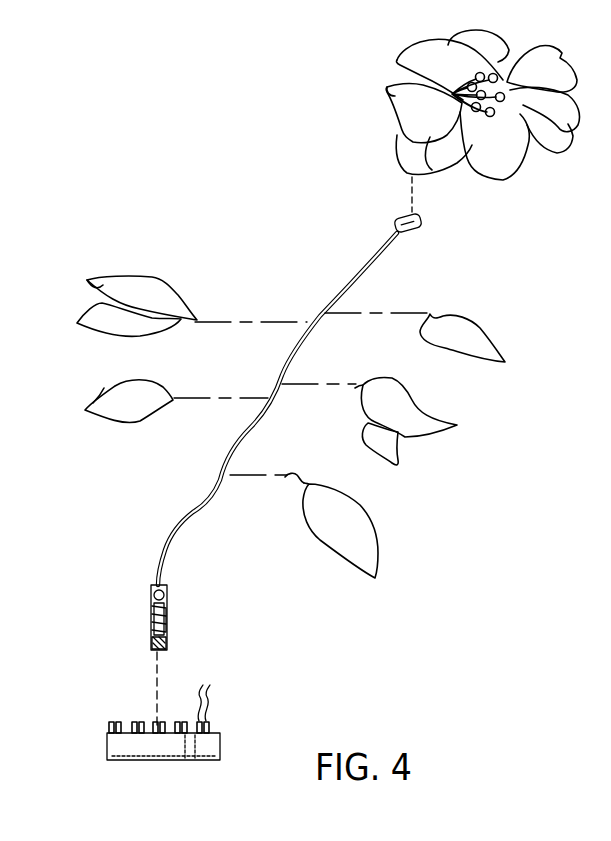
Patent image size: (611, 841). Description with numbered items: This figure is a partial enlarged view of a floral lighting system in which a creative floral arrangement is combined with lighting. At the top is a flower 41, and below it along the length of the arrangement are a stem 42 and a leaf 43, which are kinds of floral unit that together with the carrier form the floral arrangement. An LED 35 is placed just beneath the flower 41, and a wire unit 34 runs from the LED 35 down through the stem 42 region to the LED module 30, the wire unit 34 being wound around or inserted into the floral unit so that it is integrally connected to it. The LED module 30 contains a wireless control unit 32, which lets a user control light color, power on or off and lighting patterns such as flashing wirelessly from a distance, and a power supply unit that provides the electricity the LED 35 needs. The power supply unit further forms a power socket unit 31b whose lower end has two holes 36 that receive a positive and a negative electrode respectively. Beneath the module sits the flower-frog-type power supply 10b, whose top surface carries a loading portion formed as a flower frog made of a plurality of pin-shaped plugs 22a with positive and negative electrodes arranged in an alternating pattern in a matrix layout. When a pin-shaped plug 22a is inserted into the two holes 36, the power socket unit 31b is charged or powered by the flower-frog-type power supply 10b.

The flower-frog-type power supply 10b is at (222, 743).
The pin-shaped plugs 22a is at (178, 696).
The LED module 30 is at (171, 587).
The power socket unit 31b is at (152, 650).
The wireless control unit 32 is at (158, 622).
The wire unit 34 is at (178, 518).
The LED 35 is at (422, 220).
The holes 36 is at (170, 612).
The flower 41 is at (410, 120).
The stem 42 is at (279, 376).
The leaf 43 is at (345, 505).